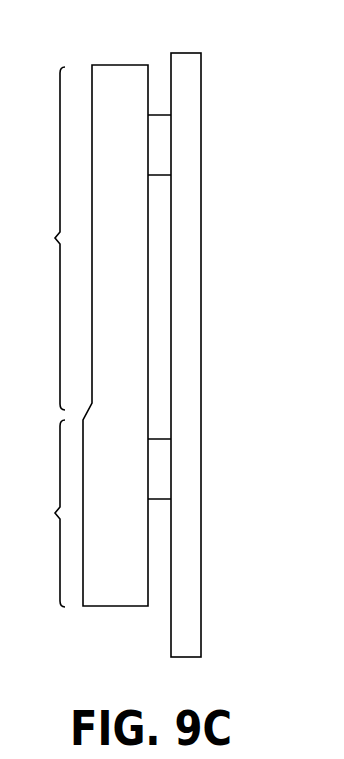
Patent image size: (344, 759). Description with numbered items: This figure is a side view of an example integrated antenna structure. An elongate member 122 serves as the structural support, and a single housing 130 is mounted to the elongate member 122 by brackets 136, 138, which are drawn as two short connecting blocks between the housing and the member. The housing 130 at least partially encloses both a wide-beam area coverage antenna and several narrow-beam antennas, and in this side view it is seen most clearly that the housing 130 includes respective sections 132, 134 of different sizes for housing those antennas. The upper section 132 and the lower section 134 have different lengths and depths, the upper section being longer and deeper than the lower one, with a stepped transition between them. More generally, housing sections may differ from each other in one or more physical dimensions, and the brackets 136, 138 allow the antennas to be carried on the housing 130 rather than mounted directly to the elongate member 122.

The elongate member 122 is at (187, 52).
The housing 130 is at (120, 64).
The housing section 132 is at (37, 238).
The housing section 134 is at (37, 513).
The bracket 136 is at (160, 144).
The bracket 138 is at (160, 467).